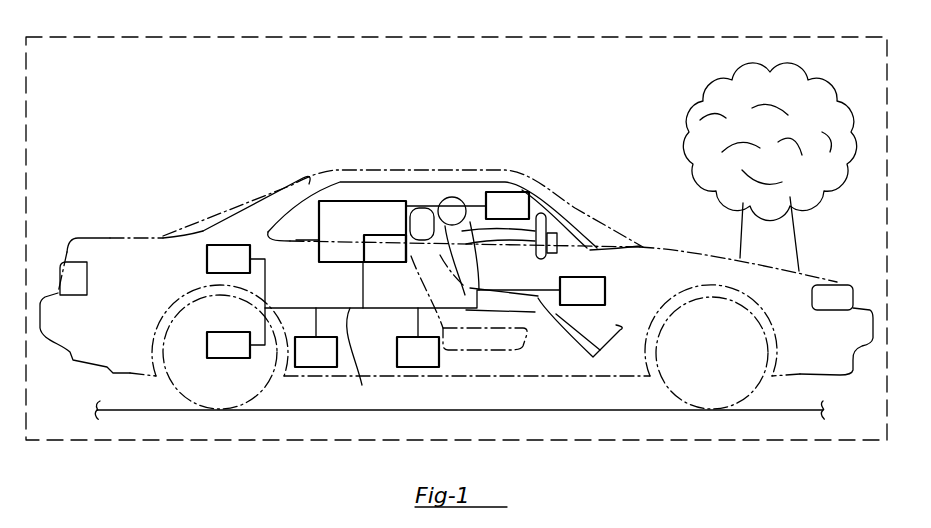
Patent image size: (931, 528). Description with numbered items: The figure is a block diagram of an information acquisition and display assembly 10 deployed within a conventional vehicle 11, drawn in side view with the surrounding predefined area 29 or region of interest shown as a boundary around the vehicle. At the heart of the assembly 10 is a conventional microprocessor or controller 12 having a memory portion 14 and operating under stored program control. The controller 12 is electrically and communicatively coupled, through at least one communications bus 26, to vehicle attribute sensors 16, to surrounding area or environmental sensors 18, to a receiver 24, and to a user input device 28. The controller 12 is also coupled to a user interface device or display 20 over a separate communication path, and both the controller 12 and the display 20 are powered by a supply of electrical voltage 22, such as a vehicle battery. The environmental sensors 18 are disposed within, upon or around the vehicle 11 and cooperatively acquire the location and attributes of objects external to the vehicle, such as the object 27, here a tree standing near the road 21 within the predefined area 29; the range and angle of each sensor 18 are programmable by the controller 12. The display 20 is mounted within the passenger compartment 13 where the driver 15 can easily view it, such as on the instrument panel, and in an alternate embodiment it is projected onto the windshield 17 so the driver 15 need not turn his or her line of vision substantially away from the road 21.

The information acquisition and display assembly 10 is at (362, 197).
The vehicle 11 is at (148, 281).
The controller 12 is at (350, 231).
The passenger compartment 13 is at (316, 237).
The memory portion 14 is at (385, 249).
The driver 15 is at (445, 195).
The vehicle attribute sensors 16 is at (228, 345).
The windshield 17 is at (582, 216).
The surrounding area sensors 18 is at (236, 295).
The display 20 is at (467, 205).
The road 21 is at (775, 411).
The supply of electrical voltage 22 is at (418, 337).
The receiver 24 is at (316, 337).
The communications bus 26 is at (362, 385).
The object 27 is at (778, 230).
The user input device 28 is at (582, 291).
The predefined area 29 is at (105, 62).